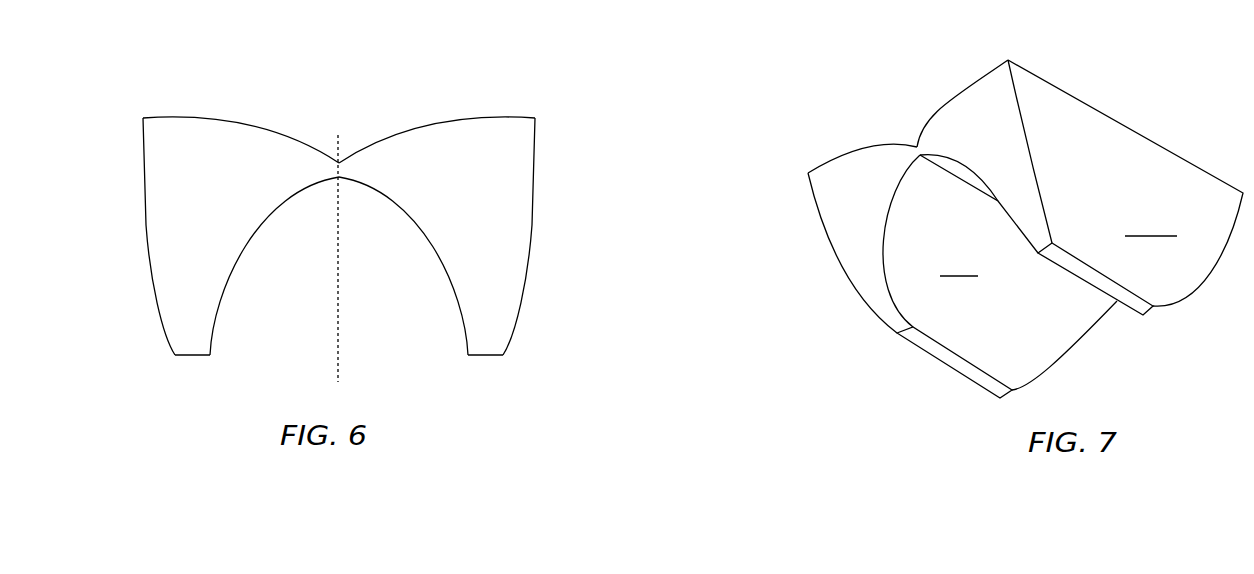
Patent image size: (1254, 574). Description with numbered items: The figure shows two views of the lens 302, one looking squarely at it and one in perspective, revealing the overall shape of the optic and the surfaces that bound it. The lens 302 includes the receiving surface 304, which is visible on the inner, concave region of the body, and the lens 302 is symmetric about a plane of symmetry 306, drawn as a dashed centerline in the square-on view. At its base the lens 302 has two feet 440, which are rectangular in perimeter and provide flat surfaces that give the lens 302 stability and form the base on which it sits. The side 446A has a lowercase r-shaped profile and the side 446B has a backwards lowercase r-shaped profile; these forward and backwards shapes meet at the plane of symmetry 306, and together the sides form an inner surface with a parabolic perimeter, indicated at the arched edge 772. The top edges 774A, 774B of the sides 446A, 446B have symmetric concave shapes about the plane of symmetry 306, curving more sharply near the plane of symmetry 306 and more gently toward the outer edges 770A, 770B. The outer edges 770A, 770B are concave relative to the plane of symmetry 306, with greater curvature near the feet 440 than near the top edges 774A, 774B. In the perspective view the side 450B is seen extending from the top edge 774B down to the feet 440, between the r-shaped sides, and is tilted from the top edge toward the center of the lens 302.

In FIG. 6, the lens 302 is at (174, 86).
In FIG. 7, the lens 302 is at (853, 68).
In FIG. 7, the receiving surface 304 is at (959, 265).
In FIG. 6, the plane of symmetry 306 is at (339, 312).
In FIG. 6, the feet 440 is at (190, 357).
In FIG. 7, the feet 440 is at (952, 355).
In FIG. 6, the side 446A is at (152, 230).
In FIG. 7, the side 446A is at (843, 216).
In FIG. 6, the side 446B is at (522, 158).
In FIG. 7, the side 446B is at (1003, 147).
In FIG. 7, the side 450B is at (1125, 183).
In FIG. 6, the outer edge 770A is at (143, 190).
In FIG. 7, the outer edge 770A is at (813, 200).
In FIG. 6, the outer edge 770B is at (534, 224).
In FIG. 7, the outer edge 770B is at (1047, 198).
In FIG. 6, the inner arched edge 772 is at (237, 255).
In FIG. 7, the inner arched edge 772 is at (1013, 222).
In FIG. 6, the top edge 774A is at (258, 126).
In FIG. 7, the top edge 774A is at (853, 148).
In FIG. 6, the top edge 774B is at (453, 124).
In FIG. 7, the top edge 774B is at (960, 95).